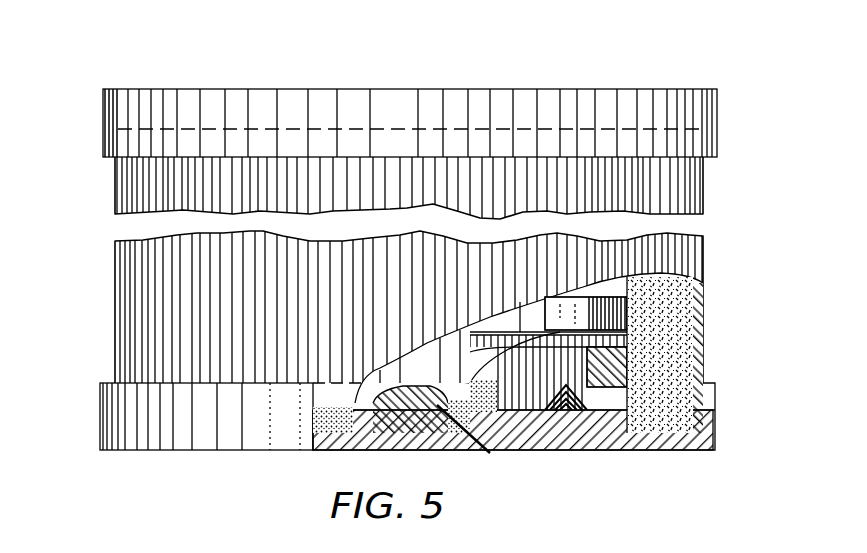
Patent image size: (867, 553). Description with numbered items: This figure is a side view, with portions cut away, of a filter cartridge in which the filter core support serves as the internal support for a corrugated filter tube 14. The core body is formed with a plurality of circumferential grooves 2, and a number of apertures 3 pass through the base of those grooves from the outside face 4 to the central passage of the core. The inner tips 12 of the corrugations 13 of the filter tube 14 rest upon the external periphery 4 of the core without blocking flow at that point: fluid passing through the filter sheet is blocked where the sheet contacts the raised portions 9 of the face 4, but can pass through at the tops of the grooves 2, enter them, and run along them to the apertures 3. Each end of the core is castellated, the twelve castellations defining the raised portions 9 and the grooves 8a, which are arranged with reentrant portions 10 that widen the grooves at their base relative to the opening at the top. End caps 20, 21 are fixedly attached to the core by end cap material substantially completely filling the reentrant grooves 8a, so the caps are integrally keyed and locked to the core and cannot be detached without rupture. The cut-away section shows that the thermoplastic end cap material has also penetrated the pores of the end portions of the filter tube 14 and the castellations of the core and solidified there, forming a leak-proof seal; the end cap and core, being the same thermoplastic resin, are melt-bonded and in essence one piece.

The circumferential grooves 2 is at (620, 323).
The apertures 3 is at (517, 322).
The outside face 4 is at (700, 370).
The grooves 8a is at (490, 453).
The raised portions 9 is at (365, 413).
The reentrant portions 10 is at (375, 415).
The inner tips 12 is at (618, 365).
The corrugations 13 is at (123, 290).
The filter tube 14 is at (118, 190).
The end cap 20 is at (158, 89).
The end cap 21 is at (672, 448).